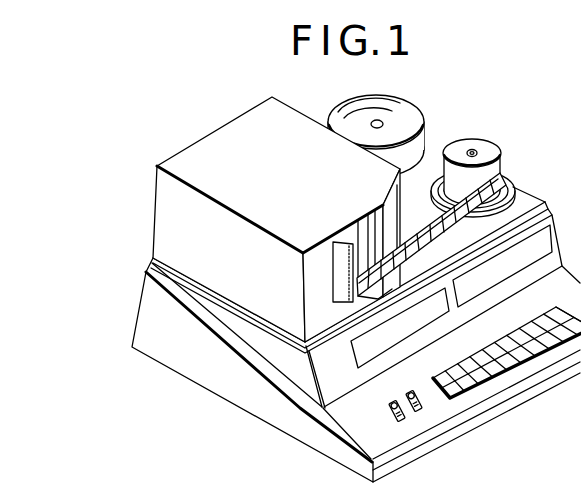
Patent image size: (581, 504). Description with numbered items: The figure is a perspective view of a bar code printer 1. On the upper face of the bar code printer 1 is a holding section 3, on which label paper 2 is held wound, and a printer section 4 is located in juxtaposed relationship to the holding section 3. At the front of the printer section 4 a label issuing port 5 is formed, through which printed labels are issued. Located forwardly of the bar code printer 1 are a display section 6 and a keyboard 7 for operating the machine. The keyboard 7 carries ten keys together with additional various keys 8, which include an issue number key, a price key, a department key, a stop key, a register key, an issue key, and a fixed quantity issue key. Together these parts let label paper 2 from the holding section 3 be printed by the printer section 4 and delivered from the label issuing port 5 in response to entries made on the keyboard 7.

The bar code printer 1 is at (143, 323).
The label paper 2 is at (488, 149).
The holding section 3 is at (470, 147).
The printer section 4 is at (198, 158).
The label issuing port 5 is at (333, 282).
The display section 6 is at (400, 333).
The keyboard 7 is at (478, 375).
The various keys 8 is at (510, 362).